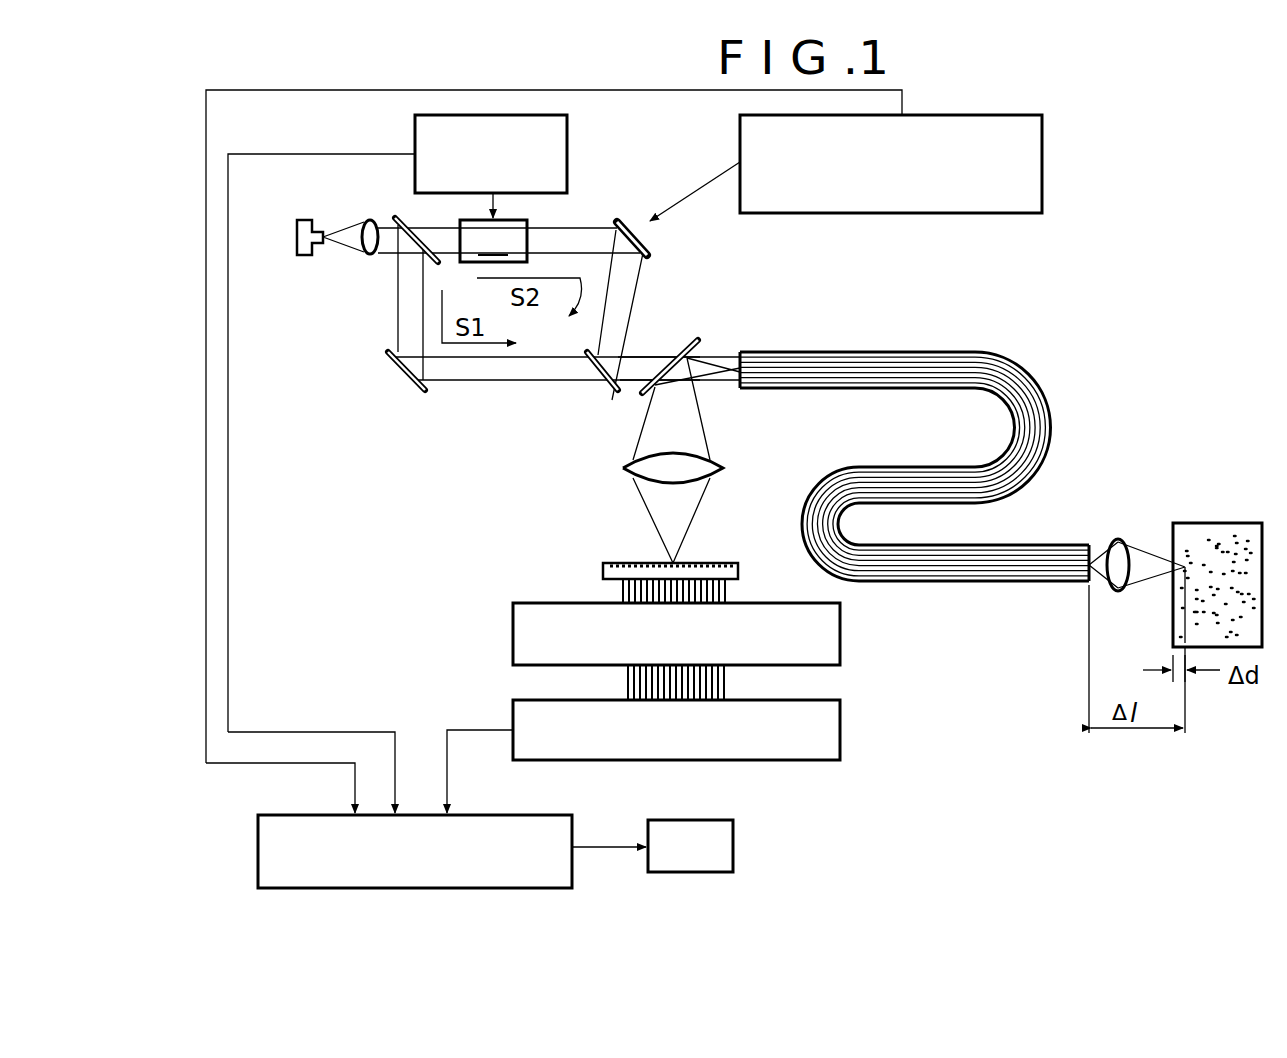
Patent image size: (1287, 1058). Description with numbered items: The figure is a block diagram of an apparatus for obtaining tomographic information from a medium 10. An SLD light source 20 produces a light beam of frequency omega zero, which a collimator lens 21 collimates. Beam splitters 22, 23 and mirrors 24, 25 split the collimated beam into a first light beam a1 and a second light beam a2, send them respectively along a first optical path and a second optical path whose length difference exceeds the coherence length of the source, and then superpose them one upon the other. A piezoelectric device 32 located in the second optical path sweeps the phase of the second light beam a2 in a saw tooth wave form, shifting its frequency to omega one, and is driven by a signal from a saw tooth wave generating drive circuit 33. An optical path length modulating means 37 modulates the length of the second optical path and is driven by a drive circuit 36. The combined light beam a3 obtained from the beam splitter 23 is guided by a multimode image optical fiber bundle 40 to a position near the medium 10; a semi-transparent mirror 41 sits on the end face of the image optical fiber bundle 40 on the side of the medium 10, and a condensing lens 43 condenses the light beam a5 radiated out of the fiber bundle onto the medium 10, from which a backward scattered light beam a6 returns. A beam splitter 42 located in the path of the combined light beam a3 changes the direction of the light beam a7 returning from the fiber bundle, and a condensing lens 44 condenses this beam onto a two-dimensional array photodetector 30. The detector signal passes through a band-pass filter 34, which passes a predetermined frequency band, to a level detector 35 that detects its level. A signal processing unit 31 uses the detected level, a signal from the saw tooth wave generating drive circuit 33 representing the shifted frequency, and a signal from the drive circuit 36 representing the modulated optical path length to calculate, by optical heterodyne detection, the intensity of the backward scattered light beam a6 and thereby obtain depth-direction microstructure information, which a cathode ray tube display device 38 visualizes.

The medium 10 is at (1242, 523).
The SLD light source 20 is at (300, 219).
The collimator lens 21 is at (368, 258).
The beam splitter 22 is at (397, 217).
The beam splitter 23 is at (615, 392).
The mirror 24 is at (402, 386).
The mirror 25 is at (650, 258).
The two-dimensional array photodetector 30 is at (605, 570).
The signal processing unit 31 is at (516, 815).
The piezoelectric device 32 is at (668, 216).
The saw tooth wave generating drive circuit 33 is at (1042, 163).
The band-pass filter 34 is at (840, 639).
The level detector 35 is at (840, 733).
The drive circuit 36 is at (567, 151).
The optical path length modulating means 37 is at (493, 241).
The cathode ray tube display device 38 is at (695, 820).
The multimode image optical fiber bundle 40 is at (1060, 410).
The semi-transparent mirror 41 is at (1100, 540).
The beam splitter 42 is at (700, 338).
The condensing lens 43 is at (1132, 552).
The condensing lens 44 is at (626, 469).
The first light beam a1 is at (520, 378).
The second light beam a2 is at (623, 298).
The combined light beam a3 is at (643, 365).
The light beam a5 is at (1100, 578).
The backward scattered light beam a6 is at (1024, 653).
The returning light beam a7 is at (688, 424).